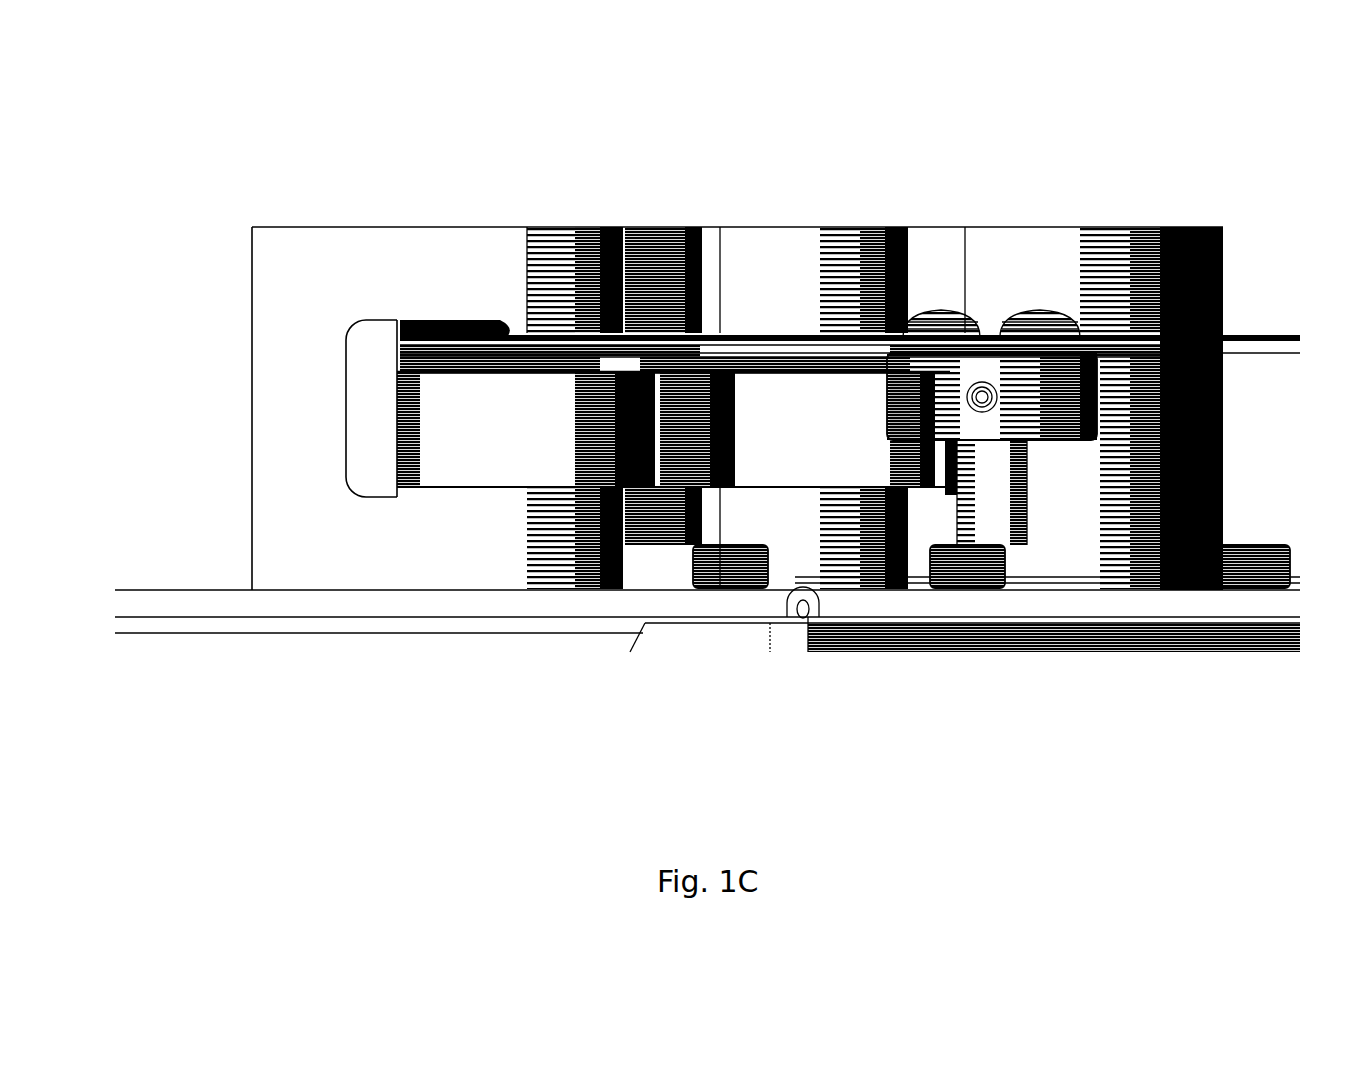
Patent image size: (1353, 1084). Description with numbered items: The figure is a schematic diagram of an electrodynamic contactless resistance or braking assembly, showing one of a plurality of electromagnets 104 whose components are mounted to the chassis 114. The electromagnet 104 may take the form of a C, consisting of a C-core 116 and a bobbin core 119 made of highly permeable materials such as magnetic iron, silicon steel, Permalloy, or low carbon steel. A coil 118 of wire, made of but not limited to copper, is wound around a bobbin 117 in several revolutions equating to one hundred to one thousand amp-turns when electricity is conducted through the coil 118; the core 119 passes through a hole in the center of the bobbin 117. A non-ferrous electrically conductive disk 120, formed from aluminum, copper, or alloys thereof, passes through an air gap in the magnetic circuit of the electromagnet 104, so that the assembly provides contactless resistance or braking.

The electromagnet 104 is at (334, 208).
The chassis 114 is at (270, 604).
The C-core 116 is at (300, 418).
The bobbin 117 is at (455, 495).
The coil 118 is at (543, 453).
The bobbin core 119 is at (600, 368).
The non-ferrous electrically conductive disk 120 is at (690, 340).